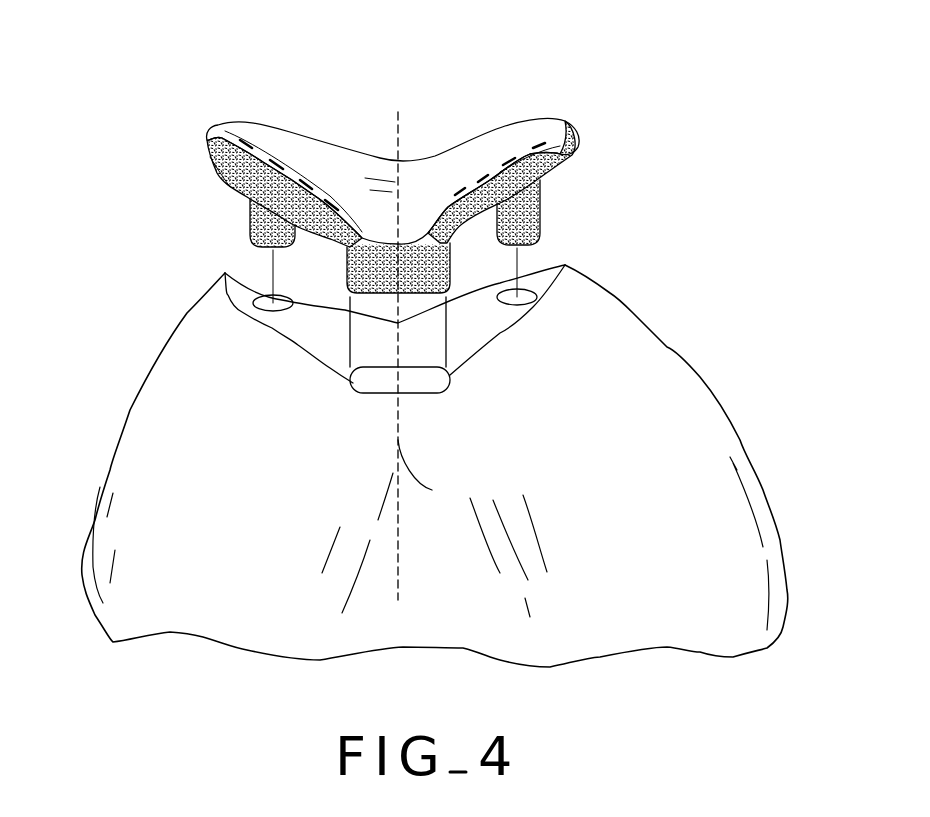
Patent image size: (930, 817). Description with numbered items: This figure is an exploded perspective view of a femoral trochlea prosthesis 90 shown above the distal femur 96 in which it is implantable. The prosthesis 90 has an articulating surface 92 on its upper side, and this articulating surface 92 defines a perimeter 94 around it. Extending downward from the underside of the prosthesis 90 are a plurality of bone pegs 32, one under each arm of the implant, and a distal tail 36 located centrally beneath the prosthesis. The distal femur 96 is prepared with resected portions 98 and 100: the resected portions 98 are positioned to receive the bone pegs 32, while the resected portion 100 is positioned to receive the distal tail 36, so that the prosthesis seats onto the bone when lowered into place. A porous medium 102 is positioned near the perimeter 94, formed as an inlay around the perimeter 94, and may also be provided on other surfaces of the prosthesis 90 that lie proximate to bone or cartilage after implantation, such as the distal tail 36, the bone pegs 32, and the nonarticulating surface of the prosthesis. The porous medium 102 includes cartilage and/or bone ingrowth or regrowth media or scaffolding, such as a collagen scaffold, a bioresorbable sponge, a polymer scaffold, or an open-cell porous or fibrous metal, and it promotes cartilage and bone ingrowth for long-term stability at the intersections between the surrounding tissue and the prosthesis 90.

The femoral trochlea prosthesis 90 is at (566, 90).
The articulating surface 92 is at (425, 172).
The perimeter 94 is at (205, 157).
The porous medium 102 is at (222, 175).
The bone pegs 32 is at (248, 220).
The distal tail 36 is at (347, 272).
The resected portions 98 is at (258, 305).
The resected portion 100 is at (355, 387).
The distal femur 96 is at (703, 443).